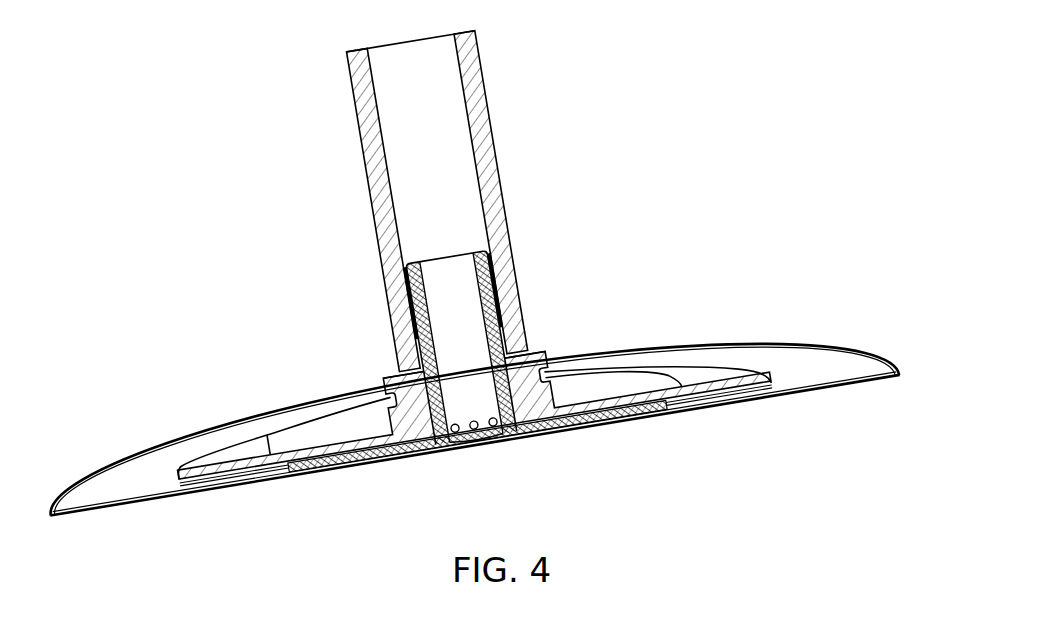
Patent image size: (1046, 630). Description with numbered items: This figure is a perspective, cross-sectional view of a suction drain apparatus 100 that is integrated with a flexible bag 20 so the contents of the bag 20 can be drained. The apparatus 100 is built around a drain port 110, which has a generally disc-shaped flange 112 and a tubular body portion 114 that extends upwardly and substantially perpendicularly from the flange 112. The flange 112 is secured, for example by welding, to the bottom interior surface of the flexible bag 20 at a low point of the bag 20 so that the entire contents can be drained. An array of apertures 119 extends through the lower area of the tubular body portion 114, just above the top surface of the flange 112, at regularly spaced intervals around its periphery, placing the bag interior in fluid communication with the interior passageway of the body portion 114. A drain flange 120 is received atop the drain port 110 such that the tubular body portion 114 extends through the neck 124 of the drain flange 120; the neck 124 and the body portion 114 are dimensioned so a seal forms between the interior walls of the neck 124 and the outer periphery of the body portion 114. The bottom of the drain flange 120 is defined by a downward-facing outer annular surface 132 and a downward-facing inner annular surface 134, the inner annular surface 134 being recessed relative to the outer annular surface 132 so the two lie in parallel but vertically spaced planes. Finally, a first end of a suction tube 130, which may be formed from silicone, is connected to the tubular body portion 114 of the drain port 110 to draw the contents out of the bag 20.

The suction drain apparatus 100 is at (572, 62).
The suction tube 130 is at (489, 121).
The drain port 110 is at (498, 306).
The tubular body portion 114 is at (409, 303).
The neck 124 is at (547, 366).
The drain flange 120 is at (716, 378).
The flexible bag 20 is at (823, 378).
The outer annular surface 132 is at (701, 412).
The inner annular surface 134 is at (606, 428).
The flange 112 is at (330, 478).
The apertures 119 is at (474, 432).